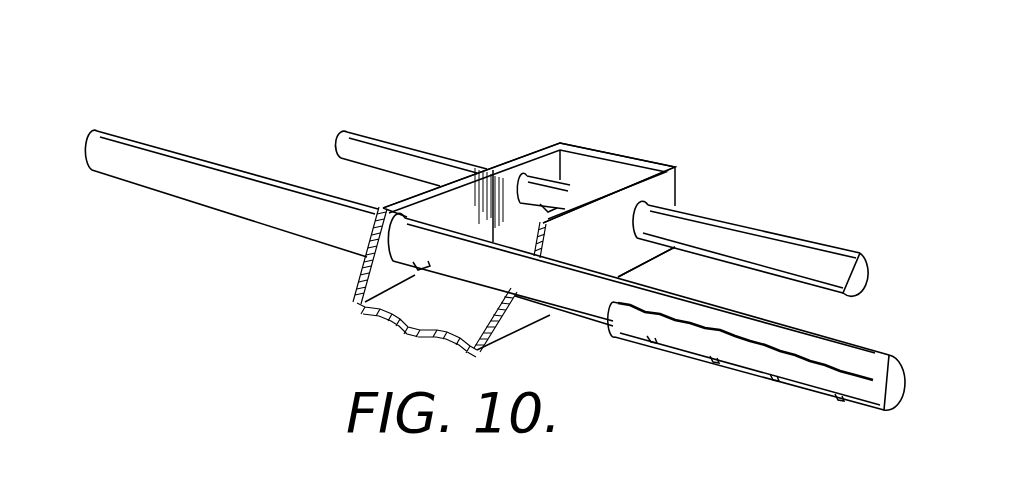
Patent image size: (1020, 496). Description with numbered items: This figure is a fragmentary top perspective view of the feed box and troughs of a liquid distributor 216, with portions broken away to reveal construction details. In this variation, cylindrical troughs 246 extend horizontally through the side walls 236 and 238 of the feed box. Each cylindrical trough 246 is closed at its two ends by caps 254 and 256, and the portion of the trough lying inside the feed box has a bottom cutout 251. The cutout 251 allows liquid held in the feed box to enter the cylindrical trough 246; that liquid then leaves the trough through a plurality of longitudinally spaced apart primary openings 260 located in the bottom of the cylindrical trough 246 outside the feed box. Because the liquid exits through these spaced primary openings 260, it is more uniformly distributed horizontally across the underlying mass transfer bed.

The liquid distributor 216 is at (596, 140).
The side wall 236 is at (668, 190).
The side wall 238 is at (543, 157).
The cylindrical trough 246 is at (769, 230).
The bottom cutout 251 is at (551, 210).
The cap 254 is at (863, 272).
The cap 256 is at (90, 133).
The primary opening 260 is at (711, 360).